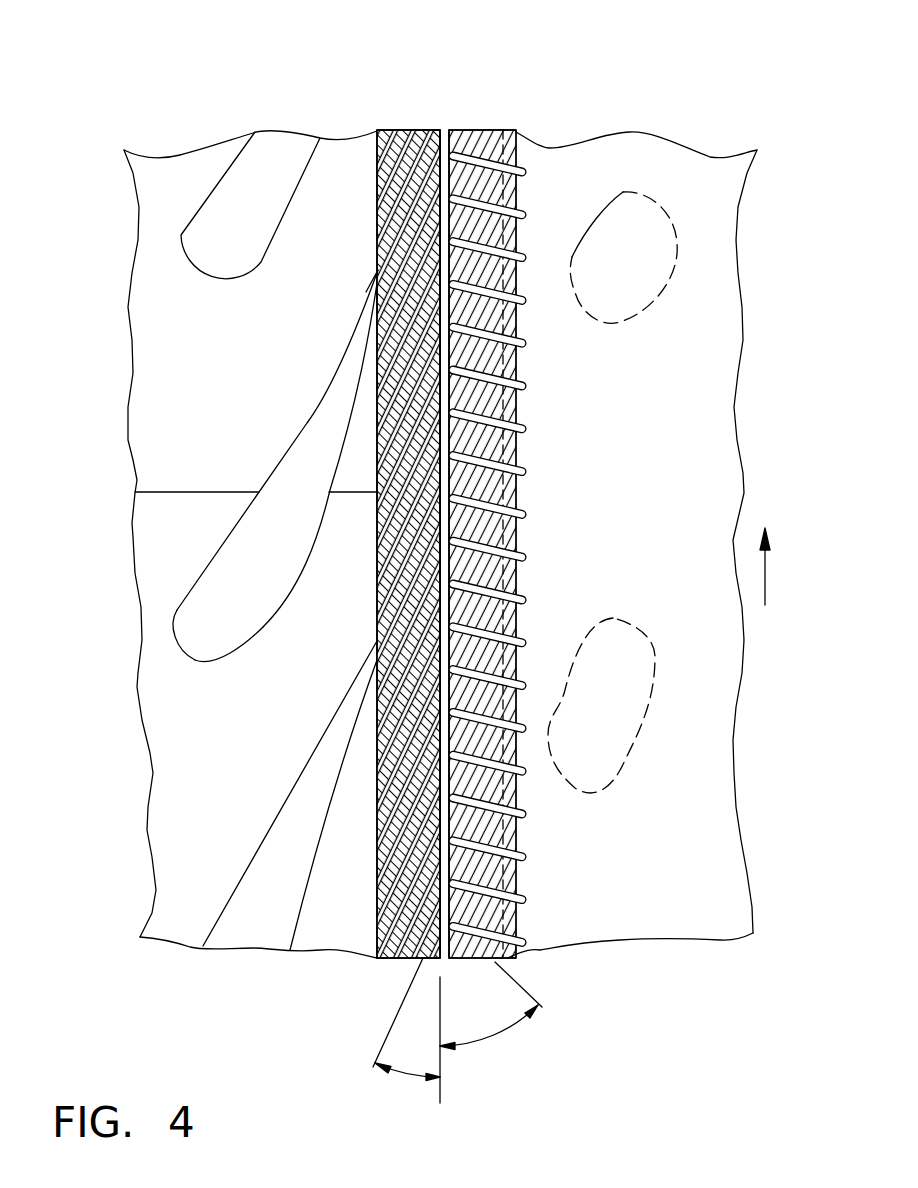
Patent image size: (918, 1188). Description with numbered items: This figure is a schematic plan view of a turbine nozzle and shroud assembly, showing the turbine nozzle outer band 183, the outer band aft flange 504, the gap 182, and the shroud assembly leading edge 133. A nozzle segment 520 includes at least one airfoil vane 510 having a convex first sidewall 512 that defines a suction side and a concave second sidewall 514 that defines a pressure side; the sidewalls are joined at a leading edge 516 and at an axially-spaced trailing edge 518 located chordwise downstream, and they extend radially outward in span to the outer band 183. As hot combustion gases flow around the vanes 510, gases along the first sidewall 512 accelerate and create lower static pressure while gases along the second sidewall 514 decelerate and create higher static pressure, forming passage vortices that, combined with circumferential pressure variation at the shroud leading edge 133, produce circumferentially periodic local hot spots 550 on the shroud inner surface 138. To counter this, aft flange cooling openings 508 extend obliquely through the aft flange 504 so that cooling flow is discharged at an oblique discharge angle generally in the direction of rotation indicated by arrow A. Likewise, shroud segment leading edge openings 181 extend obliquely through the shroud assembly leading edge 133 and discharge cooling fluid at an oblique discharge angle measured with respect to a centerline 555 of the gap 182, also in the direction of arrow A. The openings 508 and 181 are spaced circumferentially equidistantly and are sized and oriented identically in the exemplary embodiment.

The turbine nozzle outer band 183 is at (198, 173).
The outer band aft flange 504 is at (400, 130).
The trailing edge 518 is at (378, 273).
The second sidewall 514 is at (268, 478).
The airfoil vane 510 is at (213, 566).
The first sidewall 512 is at (265, 630).
The leading edge 516 is at (190, 657).
The aft flange cooling openings 508 is at (377, 922).
The gap 182 is at (446, 130).
The shroud inner surface 138 is at (708, 163).
The hot spots 550 is at (612, 302).
The shroud assembly leading edge 133 is at (517, 487).
The shroud segment leading edge openings 181 is at (528, 902).
The arrow indicating direction of rotation A is at (765, 577).
The nozzle segment 520 is at (72, 365).
The centerline 555 is at (440, 1091).